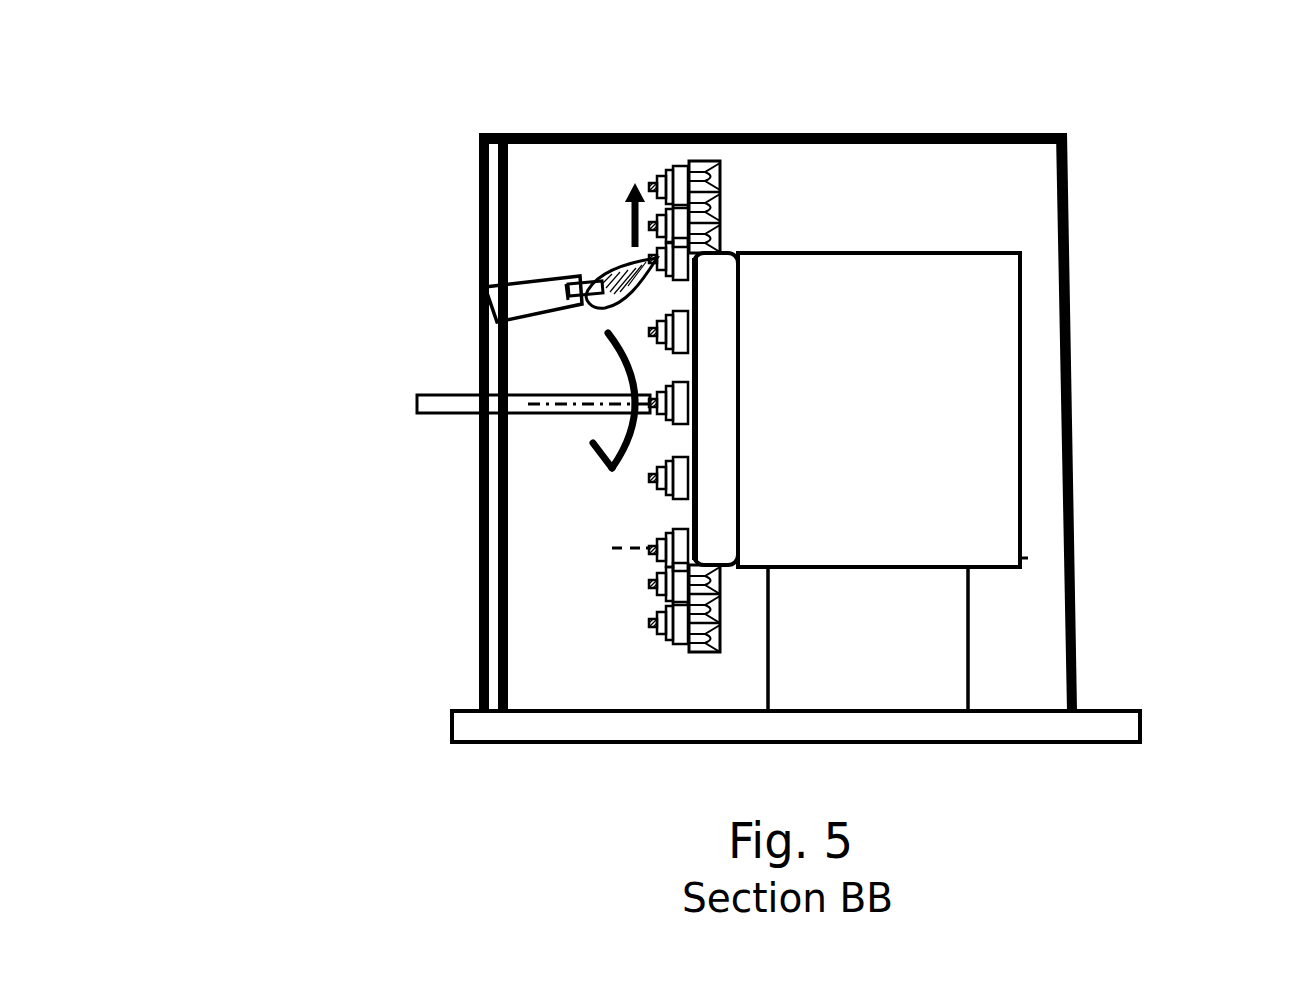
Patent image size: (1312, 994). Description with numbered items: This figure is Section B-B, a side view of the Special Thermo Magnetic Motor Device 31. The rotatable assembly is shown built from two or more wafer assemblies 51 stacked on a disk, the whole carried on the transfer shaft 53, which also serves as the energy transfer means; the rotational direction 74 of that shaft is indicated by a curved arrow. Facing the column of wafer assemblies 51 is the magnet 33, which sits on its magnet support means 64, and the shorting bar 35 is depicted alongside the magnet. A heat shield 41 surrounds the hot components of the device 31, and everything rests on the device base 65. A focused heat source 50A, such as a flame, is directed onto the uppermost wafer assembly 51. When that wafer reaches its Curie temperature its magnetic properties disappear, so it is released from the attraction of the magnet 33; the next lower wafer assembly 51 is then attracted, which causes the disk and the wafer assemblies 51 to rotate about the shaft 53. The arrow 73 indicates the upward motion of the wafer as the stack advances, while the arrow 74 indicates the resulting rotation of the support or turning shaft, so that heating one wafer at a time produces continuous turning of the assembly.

The Special Thermo Magnetic Motor Device 31 is at (387, 788).
The magnet 33 is at (985, 318).
The shorting bar 35 is at (720, 528).
The heat shield 41 is at (1066, 200).
The flame or focused heat source 50A is at (580, 277).
The wafer assembly 51 is at (657, 172).
The disk assembly support shaft and energy transfer means 53 is at (445, 449).
The magnet support means 64 is at (935, 612).
The Special Thermo Magnetic Motor Device base 65 is at (1092, 722).
The upward motion of wafer 73 is at (627, 213).
The rotation of support/turning shaft 74 is at (607, 472).